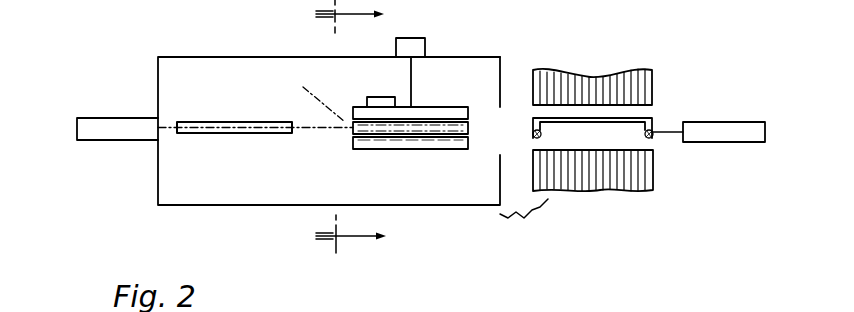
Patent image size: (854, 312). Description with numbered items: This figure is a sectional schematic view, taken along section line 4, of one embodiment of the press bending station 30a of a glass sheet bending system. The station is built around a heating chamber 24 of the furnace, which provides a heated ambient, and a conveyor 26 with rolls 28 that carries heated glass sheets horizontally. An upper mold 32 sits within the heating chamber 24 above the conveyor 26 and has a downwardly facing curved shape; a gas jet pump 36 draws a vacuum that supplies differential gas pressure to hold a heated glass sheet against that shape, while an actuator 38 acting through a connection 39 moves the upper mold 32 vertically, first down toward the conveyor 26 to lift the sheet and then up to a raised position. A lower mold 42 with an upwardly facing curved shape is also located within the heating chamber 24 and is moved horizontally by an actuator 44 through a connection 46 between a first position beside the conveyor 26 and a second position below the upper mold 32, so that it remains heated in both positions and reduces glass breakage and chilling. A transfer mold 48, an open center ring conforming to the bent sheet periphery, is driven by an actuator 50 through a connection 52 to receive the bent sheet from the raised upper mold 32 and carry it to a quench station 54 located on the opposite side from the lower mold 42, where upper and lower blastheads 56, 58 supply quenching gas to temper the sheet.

The section line 4- 4 is at (358, 126).
The heating chamber 24 is at (318, 67).
The conveyor 26 is at (345, 149).
The rolls 28 is at (414, 150).
The bending station embodiment 30a is at (486, 50).
The upper mold 32 is at (468, 106).
The gas jet pump 36 is at (378, 98).
The actuator 38 is at (410, 38).
The connection 39 is at (410, 75).
The lower mold 42 is at (292, 121).
The actuator 44 is at (131, 140).
The connection 46 is at (168, 125).
The transfer mold 48 is at (653, 130).
The actuator 50 is at (722, 121).
The connection 52 is at (668, 131).
The quench station 54 is at (636, 58).
The upper blasthead 56 is at (607, 70).
The lower blasthead 58 is at (612, 193).